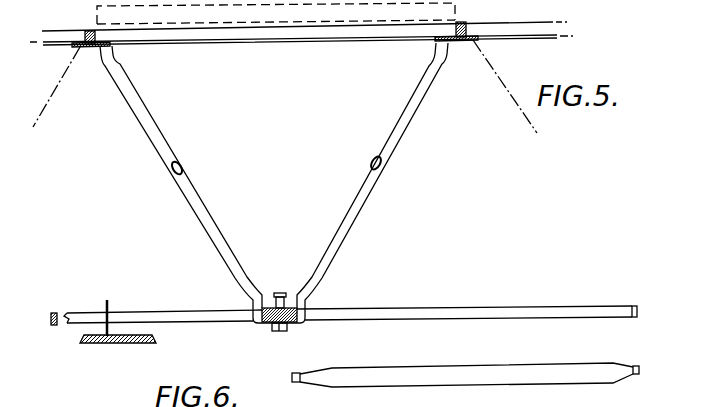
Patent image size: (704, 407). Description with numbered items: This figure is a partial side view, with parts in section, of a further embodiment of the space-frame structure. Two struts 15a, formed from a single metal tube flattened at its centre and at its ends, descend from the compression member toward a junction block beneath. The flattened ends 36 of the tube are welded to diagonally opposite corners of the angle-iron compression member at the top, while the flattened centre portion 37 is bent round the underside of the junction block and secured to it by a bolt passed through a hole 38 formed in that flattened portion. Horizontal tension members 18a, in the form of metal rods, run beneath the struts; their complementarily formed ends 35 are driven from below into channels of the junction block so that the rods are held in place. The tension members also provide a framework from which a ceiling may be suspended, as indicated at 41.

The strut 15a is at (163, 135).
The tension member 18a is at (215, 310).
The complementarily formed end 35 is at (292, 377).
The flattened end 36 is at (100, 48).
The flattened centre portion 37 is at (298, 318).
The hole 38 is at (284, 331).
The ceiling suspension point 41 is at (108, 300).